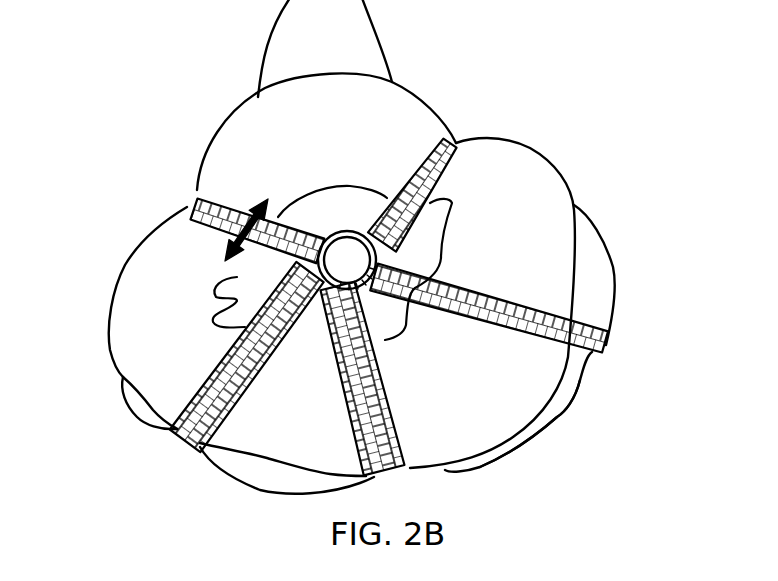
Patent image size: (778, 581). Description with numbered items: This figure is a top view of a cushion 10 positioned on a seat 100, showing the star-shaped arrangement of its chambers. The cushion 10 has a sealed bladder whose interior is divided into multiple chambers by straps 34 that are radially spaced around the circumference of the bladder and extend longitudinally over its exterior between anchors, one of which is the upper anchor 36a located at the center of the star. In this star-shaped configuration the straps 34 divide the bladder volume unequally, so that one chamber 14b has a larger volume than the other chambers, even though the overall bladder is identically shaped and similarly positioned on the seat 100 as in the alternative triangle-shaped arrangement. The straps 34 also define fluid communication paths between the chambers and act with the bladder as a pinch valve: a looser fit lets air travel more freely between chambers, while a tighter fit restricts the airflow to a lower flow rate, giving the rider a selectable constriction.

The cushion 10 is at (515, 82).
The chamber 14b is at (290, 147).
The straps 34 is at (342, 385).
The upper anchor 36a is at (365, 235).
The seat 100 is at (502, 447).